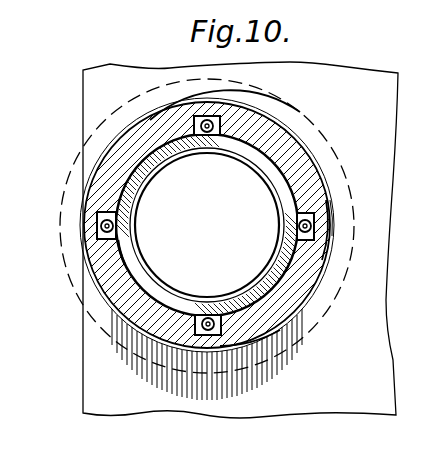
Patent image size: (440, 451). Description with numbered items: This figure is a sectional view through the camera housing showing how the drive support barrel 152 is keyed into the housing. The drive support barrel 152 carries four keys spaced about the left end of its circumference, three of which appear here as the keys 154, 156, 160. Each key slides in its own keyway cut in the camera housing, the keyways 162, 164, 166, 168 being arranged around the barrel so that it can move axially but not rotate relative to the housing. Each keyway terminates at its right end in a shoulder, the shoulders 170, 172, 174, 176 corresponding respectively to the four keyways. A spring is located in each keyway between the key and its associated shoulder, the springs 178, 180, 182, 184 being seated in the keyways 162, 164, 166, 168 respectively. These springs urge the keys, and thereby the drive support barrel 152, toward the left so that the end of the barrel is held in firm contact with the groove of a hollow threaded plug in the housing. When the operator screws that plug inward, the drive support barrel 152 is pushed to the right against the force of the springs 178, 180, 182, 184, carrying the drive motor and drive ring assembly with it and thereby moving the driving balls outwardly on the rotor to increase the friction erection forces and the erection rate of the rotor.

The drive support barrel 152 is at (280, 158).
The key 154 is at (252, 110).
The key 156 is at (328, 228).
The key 160 is at (94, 214).
The keyway 162 is at (216, 114).
The keyway 164 is at (326, 194).
The keyway 166 is at (152, 343).
The keyway 168 is at (94, 229).
The shoulder 170 is at (283, 111).
The shoulder 172 is at (312, 244).
The shoulder 174 is at (236, 322).
The shoulder 176 is at (104, 253).
The spring 178 is at (208, 116).
The spring 180 is at (330, 213).
The spring 182 is at (203, 334).
The spring 184 is at (95, 222).